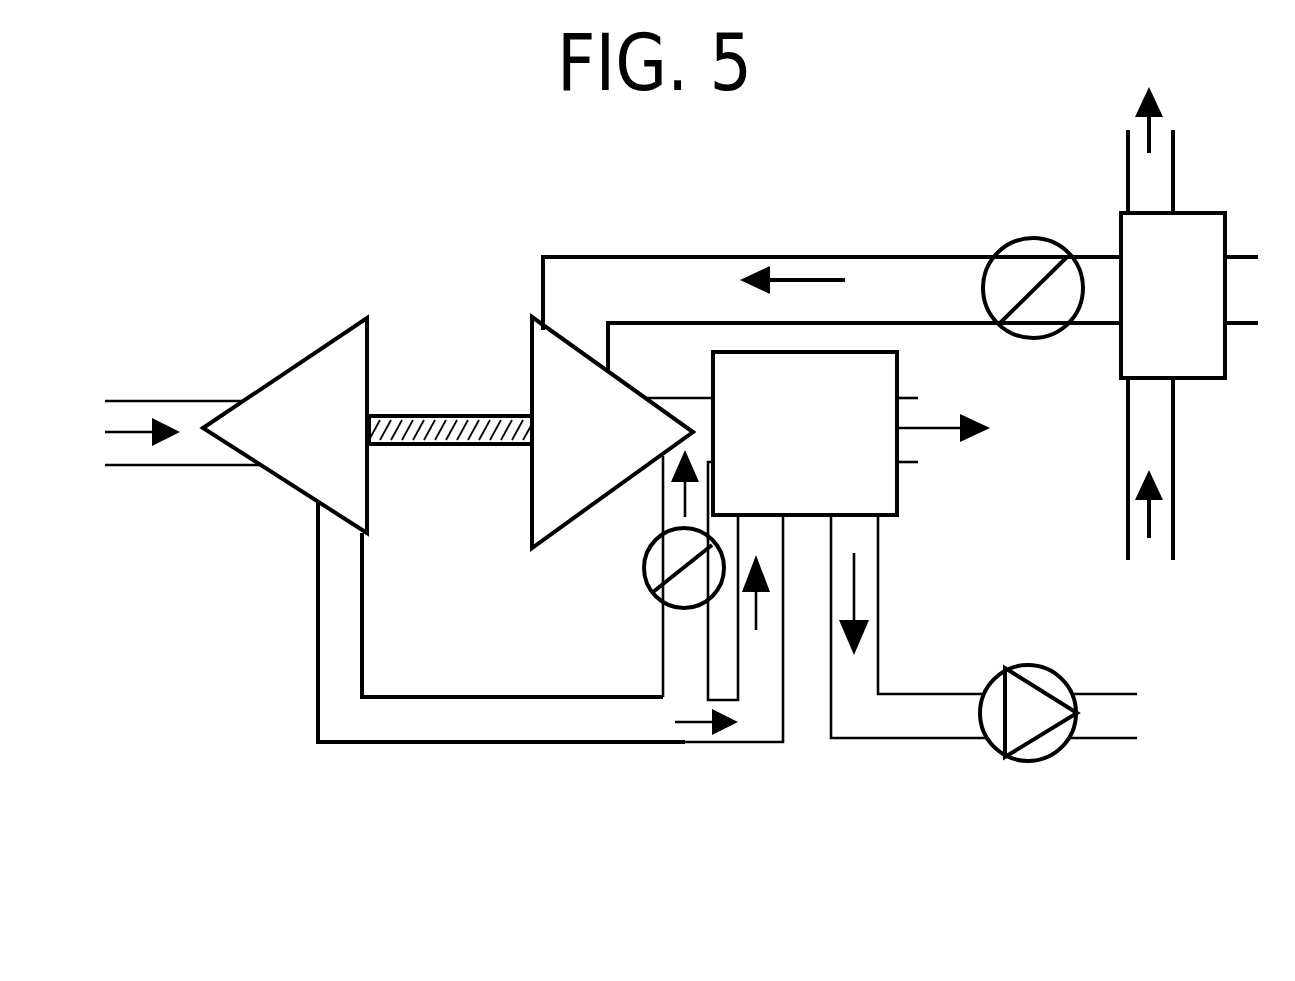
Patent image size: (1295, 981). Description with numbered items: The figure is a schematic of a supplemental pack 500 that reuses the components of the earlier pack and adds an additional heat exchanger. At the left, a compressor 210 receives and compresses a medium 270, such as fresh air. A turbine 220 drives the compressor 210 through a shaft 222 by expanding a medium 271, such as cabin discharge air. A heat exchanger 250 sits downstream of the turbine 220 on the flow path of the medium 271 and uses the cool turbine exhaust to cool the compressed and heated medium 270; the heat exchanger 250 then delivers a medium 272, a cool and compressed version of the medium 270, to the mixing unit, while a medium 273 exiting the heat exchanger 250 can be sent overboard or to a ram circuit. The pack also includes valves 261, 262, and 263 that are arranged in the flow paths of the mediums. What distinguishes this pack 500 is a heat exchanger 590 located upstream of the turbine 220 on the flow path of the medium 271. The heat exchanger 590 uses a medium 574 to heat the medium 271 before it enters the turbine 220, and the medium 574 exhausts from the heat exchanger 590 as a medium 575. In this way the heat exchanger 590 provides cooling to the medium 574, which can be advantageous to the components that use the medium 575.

The pack 500 is at (190, 145).
The compressor 210 is at (346, 448).
The turbine 220 is at (598, 450).
The shaft 222 is at (493, 415).
The heat exchanger 250 is at (827, 450).
The heat exchanger 590 is at (1197, 313).
The valve 261 is at (657, 594).
The valve 262 is at (1005, 668).
The valve 263 is at (998, 252).
The medium 270 is at (117, 432).
The medium 271 is at (772, 283).
The medium 272 is at (856, 585).
The medium 273 is at (977, 425).
The medium 574 is at (1152, 508).
The medium 575 is at (1152, 122).